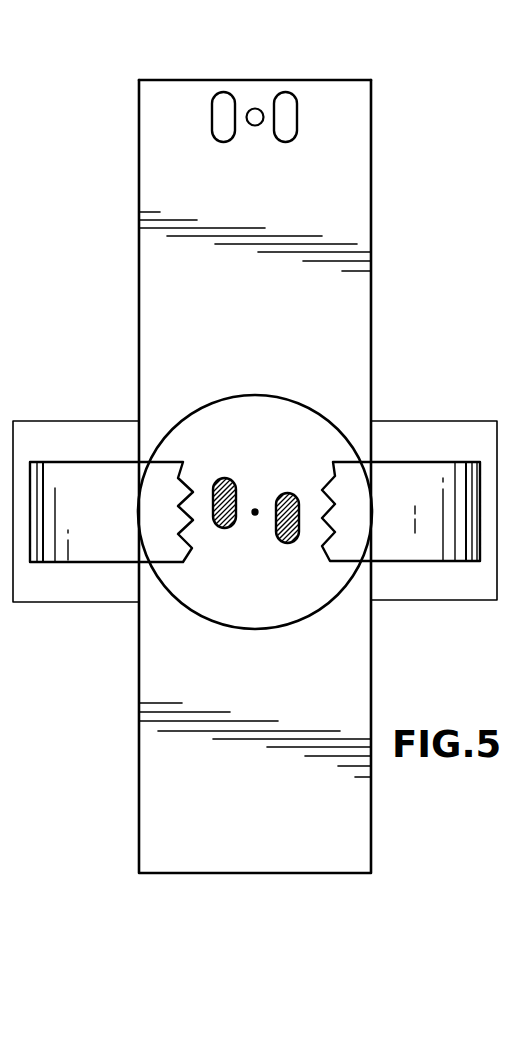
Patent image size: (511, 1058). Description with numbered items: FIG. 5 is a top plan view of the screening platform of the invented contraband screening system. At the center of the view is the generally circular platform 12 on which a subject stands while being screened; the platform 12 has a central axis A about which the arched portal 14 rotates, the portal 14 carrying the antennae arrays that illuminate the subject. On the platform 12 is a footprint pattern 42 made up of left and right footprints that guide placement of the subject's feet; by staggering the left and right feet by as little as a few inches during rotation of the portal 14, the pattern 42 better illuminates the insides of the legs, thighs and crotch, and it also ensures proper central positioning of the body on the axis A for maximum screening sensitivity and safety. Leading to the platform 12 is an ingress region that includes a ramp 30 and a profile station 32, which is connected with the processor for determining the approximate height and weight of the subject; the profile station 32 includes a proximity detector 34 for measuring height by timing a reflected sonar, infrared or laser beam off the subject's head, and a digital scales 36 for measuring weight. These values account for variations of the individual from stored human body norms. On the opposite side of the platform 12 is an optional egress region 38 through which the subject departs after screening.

The platform 12 is at (312, 404).
The arched portal 14 is at (440, 562).
The ramp 30 is at (372, 352).
The profile station 32 is at (246, 94).
The proximity detector 34 is at (255, 127).
The digital scales 36 is at (297, 110).
The egress region 38 is at (372, 688).
The footprint pattern 42 is at (297, 493).
The central axis A is at (255, 506).